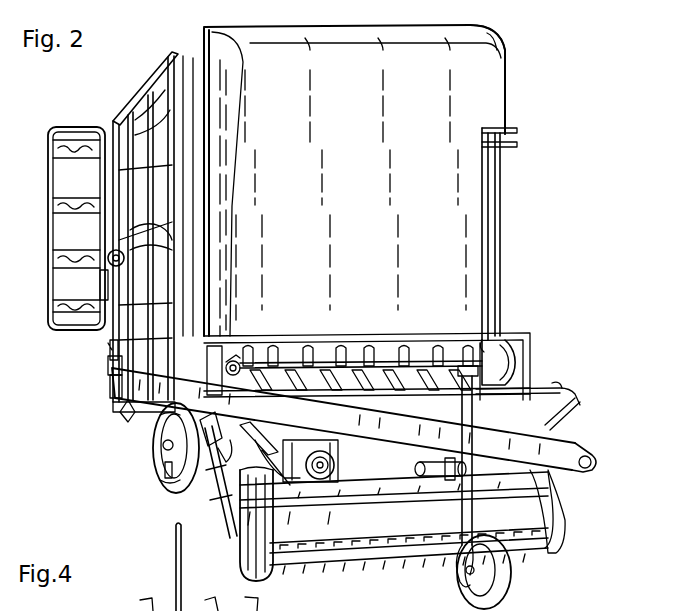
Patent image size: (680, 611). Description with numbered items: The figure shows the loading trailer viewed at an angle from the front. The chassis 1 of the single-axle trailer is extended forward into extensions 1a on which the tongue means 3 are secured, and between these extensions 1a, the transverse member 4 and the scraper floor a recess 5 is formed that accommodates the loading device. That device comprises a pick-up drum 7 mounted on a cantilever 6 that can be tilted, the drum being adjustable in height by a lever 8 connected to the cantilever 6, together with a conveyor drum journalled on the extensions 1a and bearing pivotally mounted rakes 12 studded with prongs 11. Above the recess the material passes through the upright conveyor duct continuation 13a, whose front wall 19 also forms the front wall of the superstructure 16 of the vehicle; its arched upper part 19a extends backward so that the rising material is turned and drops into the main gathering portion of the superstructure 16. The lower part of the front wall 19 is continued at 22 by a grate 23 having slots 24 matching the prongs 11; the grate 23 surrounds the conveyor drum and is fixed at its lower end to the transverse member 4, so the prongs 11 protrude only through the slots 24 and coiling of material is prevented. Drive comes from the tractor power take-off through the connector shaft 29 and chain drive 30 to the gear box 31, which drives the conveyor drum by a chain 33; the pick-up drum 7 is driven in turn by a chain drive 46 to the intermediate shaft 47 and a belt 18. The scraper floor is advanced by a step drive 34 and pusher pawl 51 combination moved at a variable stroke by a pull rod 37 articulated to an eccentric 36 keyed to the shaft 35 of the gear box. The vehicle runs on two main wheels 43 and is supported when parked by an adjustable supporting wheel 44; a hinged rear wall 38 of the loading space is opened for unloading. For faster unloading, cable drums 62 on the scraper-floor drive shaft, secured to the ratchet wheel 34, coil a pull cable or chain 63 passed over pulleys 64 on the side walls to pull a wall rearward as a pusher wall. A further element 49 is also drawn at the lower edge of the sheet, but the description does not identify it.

In FIG. 2, the chassis 1 is at (118, 394).
In FIG. 2, the extensions 1a is at (168, 405).
In FIG. 2, the tongue means 3 is at (572, 432).
In FIG. 2, the transverse member 4 is at (540, 388).
In FIG. 2, the recess 5 is at (512, 358).
In FIG. 2, the cantilever 6 is at (226, 540).
In FIG. 2, the pick-up drum 7 is at (415, 574).
In FIG. 2, the lever 8 is at (498, 209).
In FIG. 2, the prongs 11 is at (388, 365).
In FIG. 2, the rakes 12 is at (267, 367).
In FIG. 2, the conveyor duct continuation 13a is at (488, 98).
In FIG. 2, the superstructure 16 is at (130, 108).
In FIG. 2, the belt 18 is at (225, 431).
In FIG. 2, the front wall 19 is at (253, 68).
In FIG. 2, the upper part of front wall 19a is at (290, 33).
In FIG. 2, the lower continuation of front wall 22 is at (430, 340).
In FIG. 2, the grate 23 is at (363, 345).
In FIG. 2, the slots 24 is at (348, 345).
In FIG. 2, the connector shaft 29 is at (418, 471).
In FIG. 2, the chain drive 30 is at (378, 455).
In FIG. 2, the gear box 31 is at (310, 451).
In FIG. 2, the chain 33 is at (255, 432).
In FIG. 2, the step drive 34 is at (108, 362).
In FIG. 2, the shaft of the gear box 35 is at (284, 436).
In FIG. 2, the eccentric 36 is at (207, 488).
In FIG. 2, the pull rod 37 is at (128, 414).
In FIG. 2, the hinged rear wall 38 is at (73, 150).
In FIG. 2, the main wheels 43 is at (180, 484).
In FIG. 2, the supporting wheel 44 is at (505, 580).
In FIG. 2, the chain drive 46 is at (161, 447).
In FIG. 2, the intermediate shaft 47 is at (164, 470).
In FIG. 4, the rod 49 is at (175, 572).
In FIG. 2, the pusher pawl 51 is at (112, 386).
In FIG. 2, the cable drums 62 is at (110, 350).
In FIG. 2, the pull cable or chain 63 is at (101, 288).
In FIG. 2, the pulleys 64 is at (108, 256).